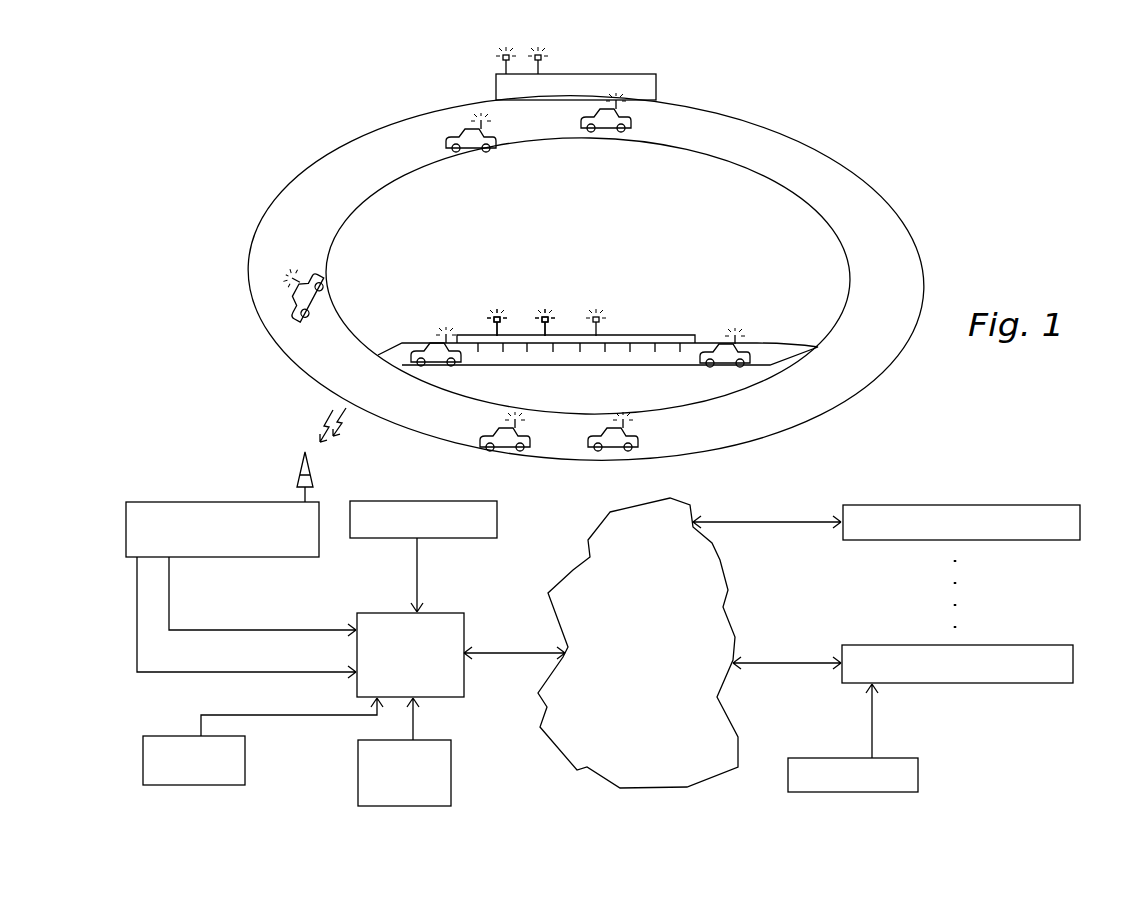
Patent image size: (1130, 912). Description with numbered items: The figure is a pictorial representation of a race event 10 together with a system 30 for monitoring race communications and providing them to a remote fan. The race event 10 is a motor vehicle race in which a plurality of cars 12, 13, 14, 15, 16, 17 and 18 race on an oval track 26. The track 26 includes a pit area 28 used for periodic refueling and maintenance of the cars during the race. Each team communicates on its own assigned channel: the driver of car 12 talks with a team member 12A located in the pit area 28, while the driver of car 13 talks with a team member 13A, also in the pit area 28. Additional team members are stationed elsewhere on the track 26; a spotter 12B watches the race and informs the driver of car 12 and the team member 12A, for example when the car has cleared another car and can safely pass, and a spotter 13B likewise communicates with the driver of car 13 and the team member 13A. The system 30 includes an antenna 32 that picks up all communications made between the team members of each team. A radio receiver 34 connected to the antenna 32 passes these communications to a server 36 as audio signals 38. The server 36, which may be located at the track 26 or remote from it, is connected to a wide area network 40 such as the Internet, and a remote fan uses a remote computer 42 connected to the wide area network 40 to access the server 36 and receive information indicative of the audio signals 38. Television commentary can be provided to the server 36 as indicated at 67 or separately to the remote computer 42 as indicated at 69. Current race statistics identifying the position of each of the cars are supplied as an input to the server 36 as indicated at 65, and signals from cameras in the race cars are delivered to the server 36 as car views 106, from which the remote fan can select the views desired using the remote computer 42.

The race event 10 is at (282, 122).
The car 12 is at (603, 128).
The team member 12A is at (490, 321).
The spotter 12B is at (498, 64).
The car 13 is at (470, 142).
The team member 13A is at (538, 321).
The spotter 13B is at (548, 62).
The car 14 is at (318, 293).
The car 15 is at (412, 348).
The car 16 is at (506, 440).
The car 17 is at (613, 440).
The car 18 is at (718, 366).
The oval track 26 is at (796, 139).
The pit area 28 is at (676, 322).
The system 30 is at (236, 509).
The antenna 32 is at (298, 455).
The radio receiver 34 is at (228, 557).
The server 36 is at (464, 688).
The audio signals 38 is at (338, 612).
The wide area network 40 is at (540, 722).
The remote computer 42 is at (1050, 540).
The race statistics input 65 is at (497, 520).
The TV feed to server 67 is at (245, 745).
The TV feed to remote computer 69 is at (900, 758).
The car views 106 is at (451, 755).